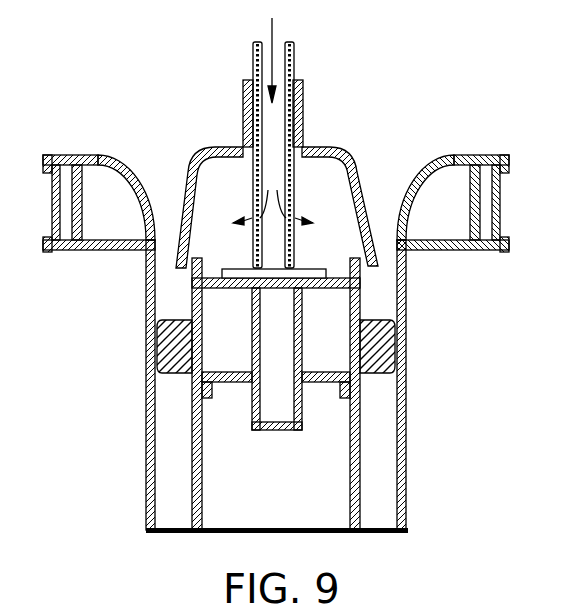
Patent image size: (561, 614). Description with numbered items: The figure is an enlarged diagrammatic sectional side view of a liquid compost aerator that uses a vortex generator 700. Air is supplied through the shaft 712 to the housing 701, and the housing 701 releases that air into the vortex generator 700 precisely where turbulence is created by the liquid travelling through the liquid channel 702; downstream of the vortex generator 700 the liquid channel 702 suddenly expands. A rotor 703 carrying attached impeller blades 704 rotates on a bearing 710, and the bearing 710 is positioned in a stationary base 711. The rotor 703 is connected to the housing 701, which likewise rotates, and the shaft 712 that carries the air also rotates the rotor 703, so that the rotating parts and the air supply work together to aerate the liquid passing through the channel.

The vortex generator 700 is at (392, 276).
The housing 701 is at (340, 153).
The liquid channel 702 is at (378, 227).
The rotor 703 is at (362, 386).
The impeller blades 704 is at (177, 322).
The bearing 710 is at (256, 412).
The stationary base 711 is at (403, 466).
The shaft 712 is at (294, 55).